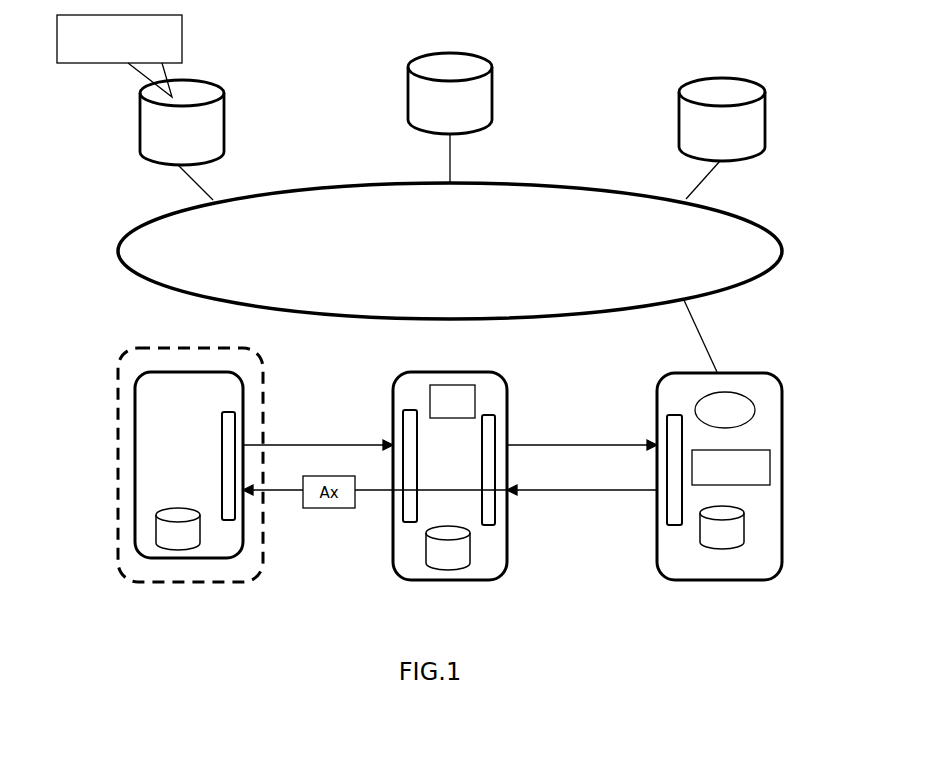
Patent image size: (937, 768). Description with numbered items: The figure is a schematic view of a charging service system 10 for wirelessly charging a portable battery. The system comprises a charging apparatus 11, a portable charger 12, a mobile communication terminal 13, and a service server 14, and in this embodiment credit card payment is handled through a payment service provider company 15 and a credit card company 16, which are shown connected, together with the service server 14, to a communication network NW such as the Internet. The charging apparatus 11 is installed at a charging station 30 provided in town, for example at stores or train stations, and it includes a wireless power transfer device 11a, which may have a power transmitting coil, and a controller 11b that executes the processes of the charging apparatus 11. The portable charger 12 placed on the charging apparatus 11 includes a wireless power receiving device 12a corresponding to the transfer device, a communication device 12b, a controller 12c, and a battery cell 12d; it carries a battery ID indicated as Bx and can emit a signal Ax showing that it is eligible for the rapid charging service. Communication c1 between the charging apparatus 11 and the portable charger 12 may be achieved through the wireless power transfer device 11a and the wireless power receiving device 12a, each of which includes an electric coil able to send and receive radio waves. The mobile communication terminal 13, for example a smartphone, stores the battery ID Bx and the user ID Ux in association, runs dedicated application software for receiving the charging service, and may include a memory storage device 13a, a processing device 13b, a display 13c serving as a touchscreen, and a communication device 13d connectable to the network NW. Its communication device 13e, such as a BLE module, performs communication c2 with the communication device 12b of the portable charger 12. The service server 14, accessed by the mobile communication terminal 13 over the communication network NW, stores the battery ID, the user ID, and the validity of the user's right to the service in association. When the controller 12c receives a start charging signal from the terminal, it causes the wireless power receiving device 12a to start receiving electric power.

The charging service system 10 is at (317, 88).
The charging apparatus 11 is at (154, 495).
The wireless power transfer device 11a is at (227, 524).
The controller 11b is at (178, 544).
The portable charger 12 is at (420, 500).
The wireless power receiving device 12a is at (410, 524).
The communication device 12b is at (490, 530).
The controller 12c is at (443, 560).
The battery cell 12d is at (452, 372).
The mobile communication terminal 13 is at (688, 467).
The memory storage device 13a is at (748, 562).
The processing device 13b is at (748, 562).
The display 13c is at (748, 562).
The communication device 13d is at (725, 544).
The communication device 13e is at (675, 529).
The service server 14 is at (203, 82).
The payment service provider company 15 is at (487, 57).
The credit card company 16 is at (760, 84).
The charging station 30 is at (135, 330).
The communication network NW is at (563, 185).
The communication c1 is at (300, 428).
The communication c2 is at (560, 426).